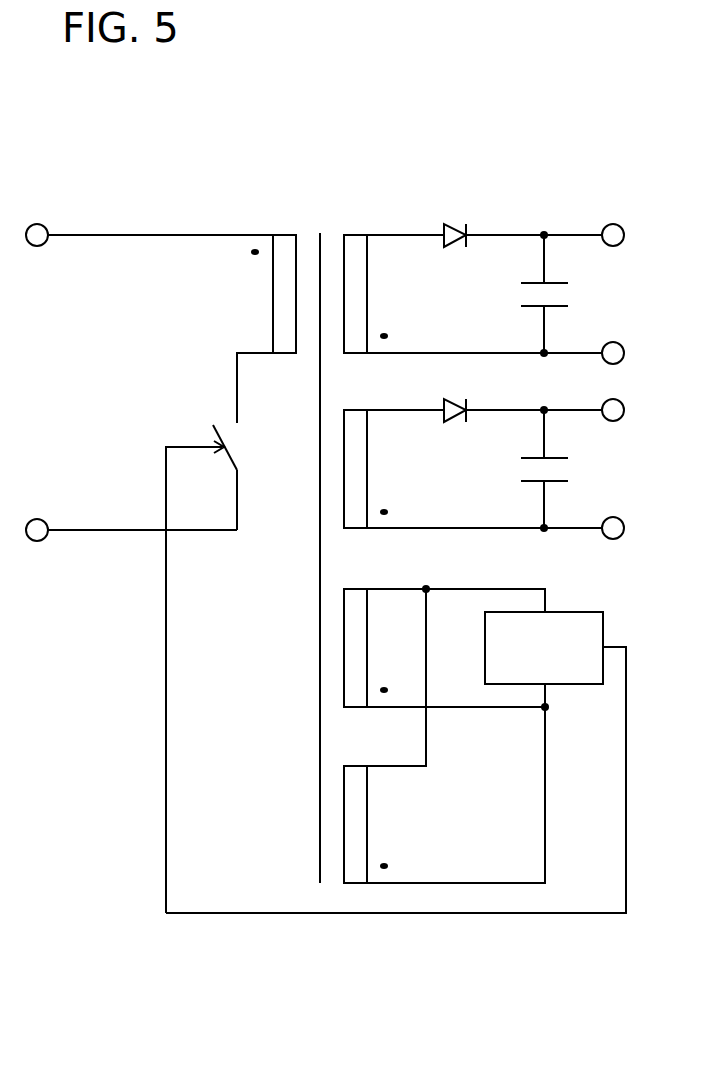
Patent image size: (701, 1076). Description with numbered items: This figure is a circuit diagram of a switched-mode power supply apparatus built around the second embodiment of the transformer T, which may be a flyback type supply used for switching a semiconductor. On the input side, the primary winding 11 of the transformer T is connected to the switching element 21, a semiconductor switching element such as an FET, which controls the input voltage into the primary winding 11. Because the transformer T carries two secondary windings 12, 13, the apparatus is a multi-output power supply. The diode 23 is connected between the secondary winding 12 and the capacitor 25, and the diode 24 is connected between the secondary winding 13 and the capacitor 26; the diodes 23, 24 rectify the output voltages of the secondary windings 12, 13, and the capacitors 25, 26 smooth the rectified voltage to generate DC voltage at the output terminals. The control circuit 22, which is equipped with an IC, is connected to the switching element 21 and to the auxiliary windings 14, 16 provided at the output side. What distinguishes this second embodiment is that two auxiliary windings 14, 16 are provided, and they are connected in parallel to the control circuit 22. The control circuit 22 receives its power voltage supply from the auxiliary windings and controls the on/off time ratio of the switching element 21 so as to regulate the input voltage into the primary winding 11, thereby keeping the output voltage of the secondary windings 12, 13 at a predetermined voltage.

The transformer T is at (318, 178).
The primary winding 11 is at (285, 233).
The secondary winding 12 is at (355, 233).
The secondary winding 13 is at (355, 410).
The auxiliary winding 14 is at (355, 589).
The auxiliary winding 16 is at (355, 766).
The switching element 21 is at (200, 405).
The control circuit 22 is at (587, 612).
The diode 23 is at (455, 222).
The diode 24 is at (471, 386).
The capacitor 25 is at (555, 283).
The capacitor 26 is at (555, 458).